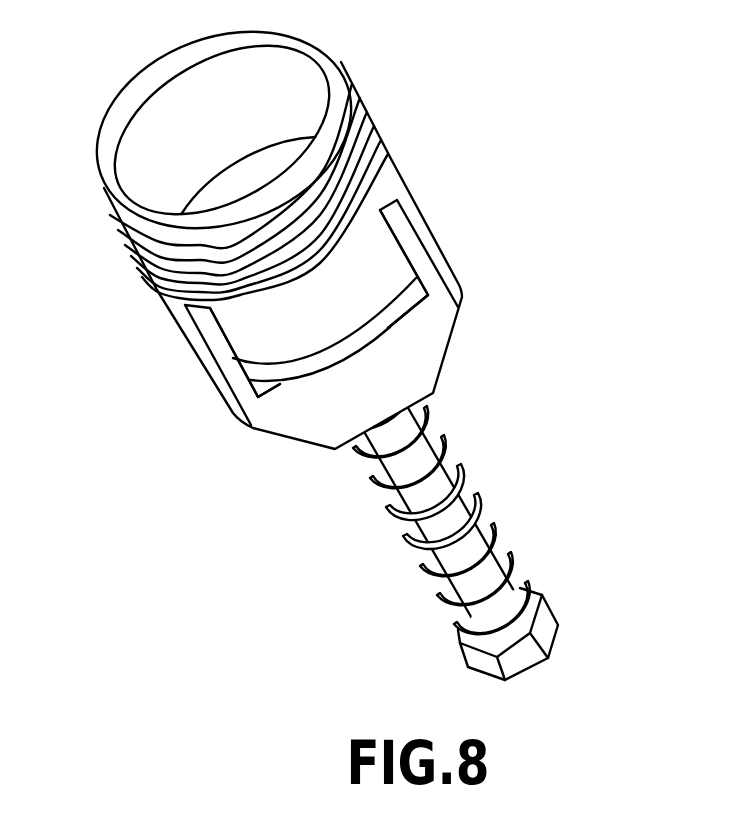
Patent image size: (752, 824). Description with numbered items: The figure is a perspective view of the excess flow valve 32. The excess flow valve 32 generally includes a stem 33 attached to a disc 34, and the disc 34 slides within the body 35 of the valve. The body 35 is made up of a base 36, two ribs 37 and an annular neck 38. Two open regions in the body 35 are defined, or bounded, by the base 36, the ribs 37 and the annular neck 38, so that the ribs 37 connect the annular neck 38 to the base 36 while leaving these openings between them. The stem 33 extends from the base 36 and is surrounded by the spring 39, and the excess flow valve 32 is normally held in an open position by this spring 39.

The excess flow valve 32 is at (436, 156).
The stem 33 is at (450, 517).
The disc 34 is at (393, 262).
The body 35 is at (410, 207).
The base 36 is at (445, 333).
The ribs 37 is at (213, 365).
The annular neck 38 is at (188, 78).
The spring 39 is at (516, 553).